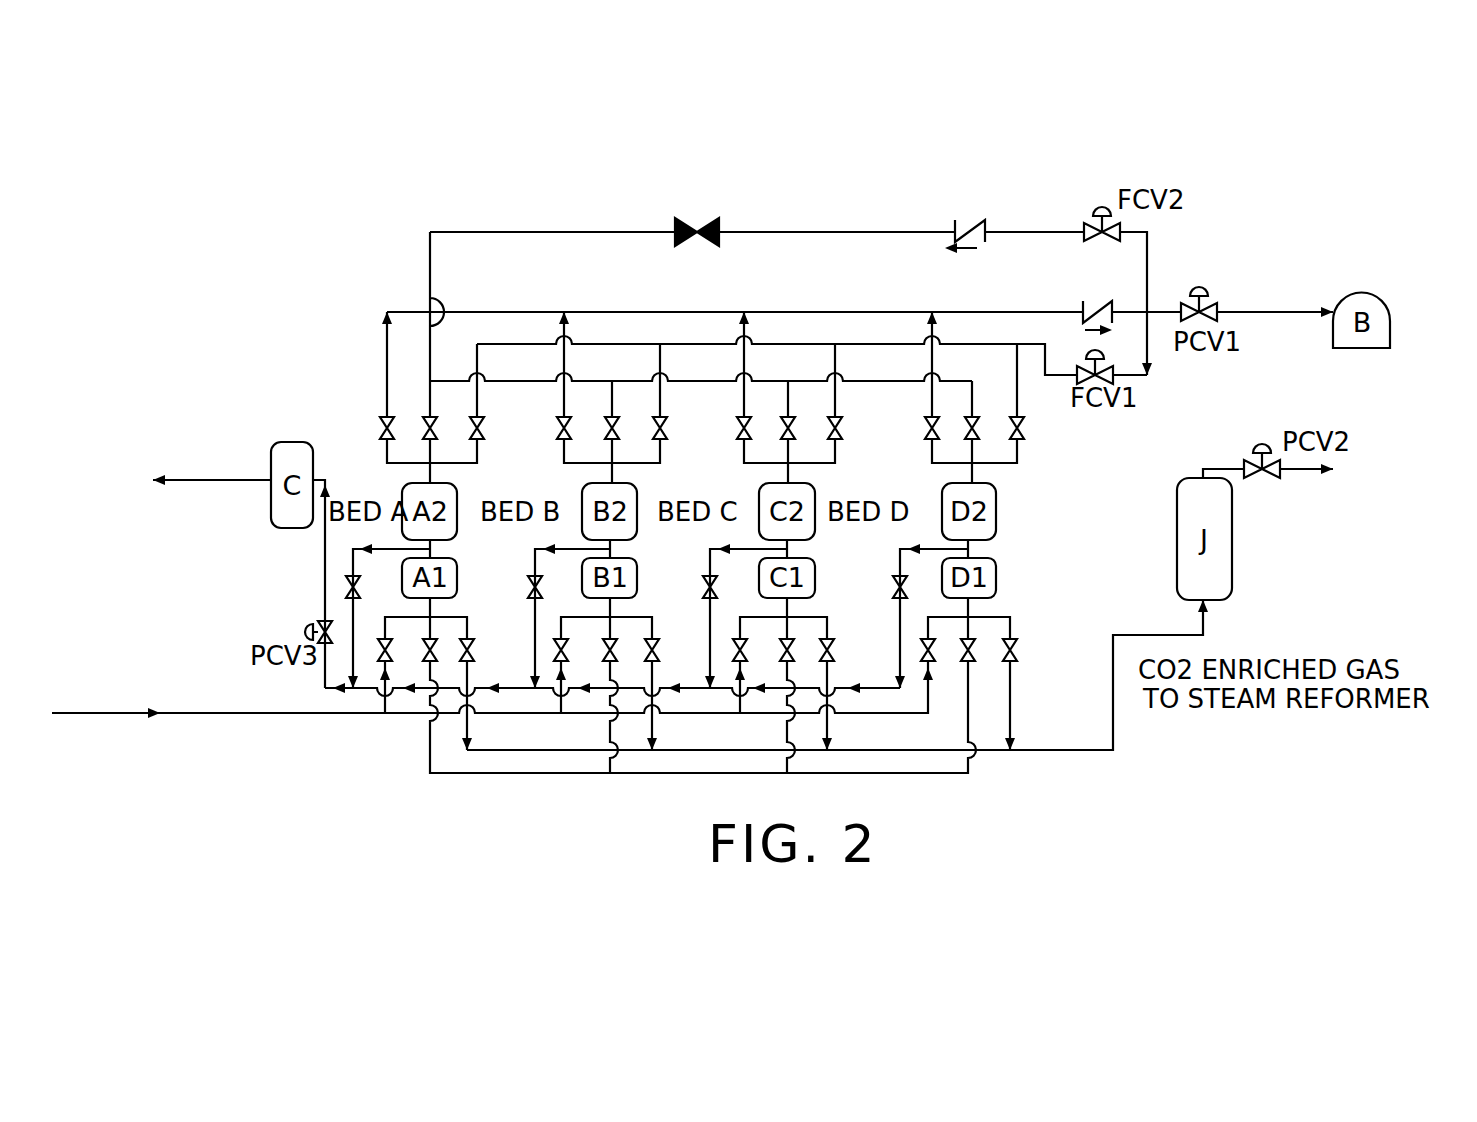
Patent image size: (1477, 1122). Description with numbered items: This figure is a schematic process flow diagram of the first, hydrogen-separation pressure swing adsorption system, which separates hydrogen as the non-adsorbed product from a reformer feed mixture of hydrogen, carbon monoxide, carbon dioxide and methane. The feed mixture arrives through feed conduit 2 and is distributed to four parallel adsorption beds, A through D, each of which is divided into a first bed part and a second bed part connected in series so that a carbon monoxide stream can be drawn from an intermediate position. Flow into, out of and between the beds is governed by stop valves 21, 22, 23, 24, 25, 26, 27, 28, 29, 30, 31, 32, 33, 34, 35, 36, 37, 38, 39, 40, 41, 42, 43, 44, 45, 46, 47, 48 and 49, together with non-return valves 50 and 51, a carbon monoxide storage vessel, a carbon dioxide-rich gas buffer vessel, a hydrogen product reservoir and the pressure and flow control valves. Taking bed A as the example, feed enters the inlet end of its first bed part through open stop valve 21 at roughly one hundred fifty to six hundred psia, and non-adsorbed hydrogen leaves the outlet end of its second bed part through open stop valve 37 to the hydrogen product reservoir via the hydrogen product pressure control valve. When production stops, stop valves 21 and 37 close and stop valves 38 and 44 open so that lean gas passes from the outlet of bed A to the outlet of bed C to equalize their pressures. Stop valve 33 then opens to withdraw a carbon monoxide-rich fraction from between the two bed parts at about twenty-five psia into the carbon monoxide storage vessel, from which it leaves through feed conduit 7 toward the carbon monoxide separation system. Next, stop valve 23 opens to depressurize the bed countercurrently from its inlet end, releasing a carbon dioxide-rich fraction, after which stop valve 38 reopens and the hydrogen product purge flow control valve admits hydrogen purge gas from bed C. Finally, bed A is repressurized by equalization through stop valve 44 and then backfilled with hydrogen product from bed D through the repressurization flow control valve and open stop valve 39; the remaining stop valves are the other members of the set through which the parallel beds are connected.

The feed conduit 2 is at (90, 714).
The feed conduit 7 is at (220, 480).
The stop valve 21 is at (382, 650).
The stop valve 22 is at (427, 652).
The stop valve 23 is at (472, 652).
The stop valve 24 is at (558, 648).
The stop valve 25 is at (603, 652).
The stop valve 26 is at (648, 647).
The stop valve 27 is at (737, 648).
The stop valve 28 is at (780, 653).
The stop valve 29 is at (822, 648).
The stop valve 30 is at (925, 650).
The stop valve 31 is at (965, 655).
The stop valve 32 is at (1005, 650).
The stop valve 33 is at (347, 583).
The stop valve 34 is at (528, 585).
The stop valve 35 is at (705, 585).
The stop valve 36 is at (895, 587).
The stop valve 37 is at (380, 430).
The stop valve 38 is at (425, 428).
The stop valve 39 is at (470, 430).
The stop valve 40 is at (557, 430).
The stop valve 41 is at (606, 430).
The stop valve 42 is at (655, 432).
The stop valve 43 is at (738, 430).
The stop valve 44 is at (782, 432).
The stop valve 45 is at (830, 432).
The stop valve 46 is at (928, 432).
The stop valve 47 is at (966, 432).
The stop valve 48 is at (1012, 432).
The stop valve 49 is at (692, 215).
The non-return valve 50 is at (952, 220).
The non-return valve 51 is at (1080, 303).